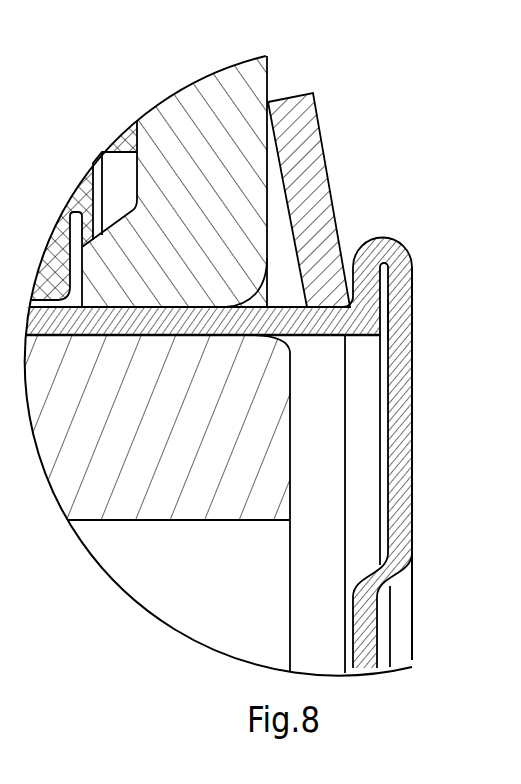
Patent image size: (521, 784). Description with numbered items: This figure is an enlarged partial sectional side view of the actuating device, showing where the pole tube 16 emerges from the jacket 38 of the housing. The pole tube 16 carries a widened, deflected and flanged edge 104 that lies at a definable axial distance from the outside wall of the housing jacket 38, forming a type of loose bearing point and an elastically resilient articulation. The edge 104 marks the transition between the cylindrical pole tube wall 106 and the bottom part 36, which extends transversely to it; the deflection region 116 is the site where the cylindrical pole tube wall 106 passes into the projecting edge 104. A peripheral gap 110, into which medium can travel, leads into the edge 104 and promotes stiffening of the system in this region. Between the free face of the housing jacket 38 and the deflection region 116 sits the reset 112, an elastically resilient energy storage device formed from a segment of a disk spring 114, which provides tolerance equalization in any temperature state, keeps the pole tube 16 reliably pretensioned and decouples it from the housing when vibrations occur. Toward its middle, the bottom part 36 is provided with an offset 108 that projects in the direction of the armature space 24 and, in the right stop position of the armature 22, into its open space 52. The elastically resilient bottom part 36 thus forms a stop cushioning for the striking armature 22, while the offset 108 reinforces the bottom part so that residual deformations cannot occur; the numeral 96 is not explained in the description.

The housing 96 is at (69, 198).
The jacket 38 is at (247, 92).
The reset 112 is at (318, 110).
The pole tube 16 is at (170, 316).
The disk spring 114 is at (270, 306).
The cylindrical pole tube wall 106 is at (312, 306).
The edge 104 is at (398, 238).
The peripheral gap 110 is at (382, 278).
The deflection region 116 is at (412, 327).
The armature space 24 is at (315, 407).
The bottom part 36 is at (412, 452).
The offset 108 is at (377, 618).
The armature 22 is at (222, 455).
The open space 52 is at (226, 588).